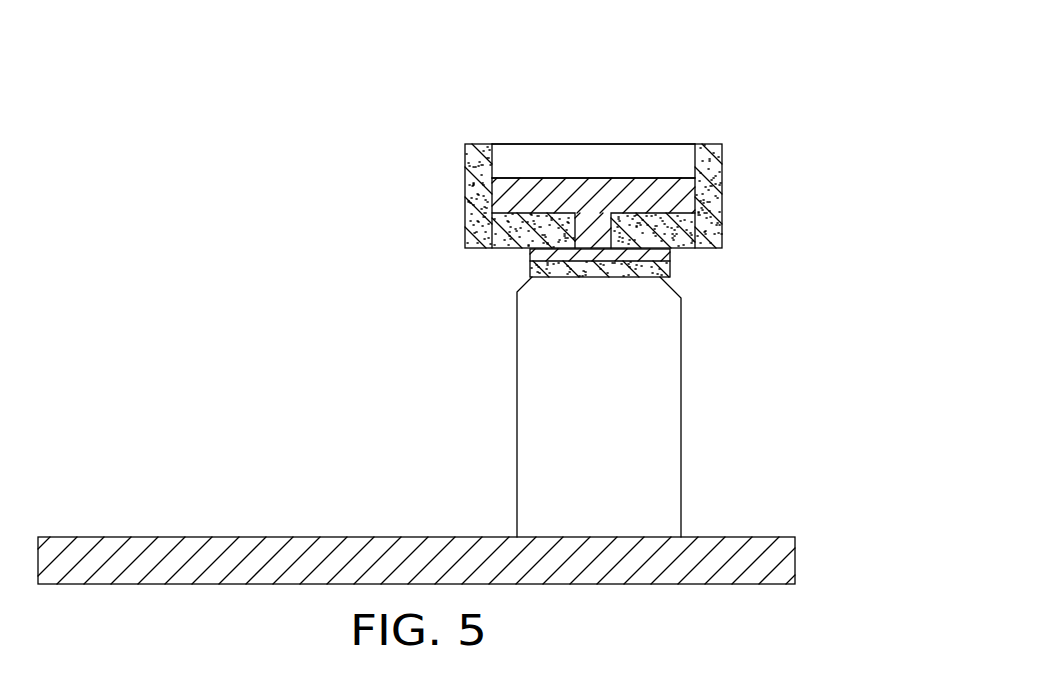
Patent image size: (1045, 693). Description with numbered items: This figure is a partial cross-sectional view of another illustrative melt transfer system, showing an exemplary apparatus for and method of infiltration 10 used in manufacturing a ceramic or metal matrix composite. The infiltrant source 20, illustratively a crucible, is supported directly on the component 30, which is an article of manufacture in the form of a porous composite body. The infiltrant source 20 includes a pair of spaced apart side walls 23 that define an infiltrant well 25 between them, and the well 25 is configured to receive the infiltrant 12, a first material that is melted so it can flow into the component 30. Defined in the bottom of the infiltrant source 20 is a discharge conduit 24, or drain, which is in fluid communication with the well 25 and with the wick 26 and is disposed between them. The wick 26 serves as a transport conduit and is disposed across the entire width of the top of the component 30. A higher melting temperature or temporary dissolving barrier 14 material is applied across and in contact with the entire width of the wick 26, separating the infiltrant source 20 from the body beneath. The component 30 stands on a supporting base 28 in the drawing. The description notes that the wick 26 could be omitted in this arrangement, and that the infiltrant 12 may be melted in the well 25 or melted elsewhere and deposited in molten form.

The apparatus for and method of infiltration 10 is at (153, 139).
The infiltrant 12 is at (572, 178).
The temporary dissolving barrier 14 is at (668, 258).
The infiltrant source 20 is at (420, 181).
The side walls 23 is at (480, 144).
The discharge conduit 24 is at (598, 251).
The infiltrant well 25 is at (617, 162).
The wick 26 is at (530, 270).
The base plate 28 is at (283, 537).
The component 30 is at (681, 388).